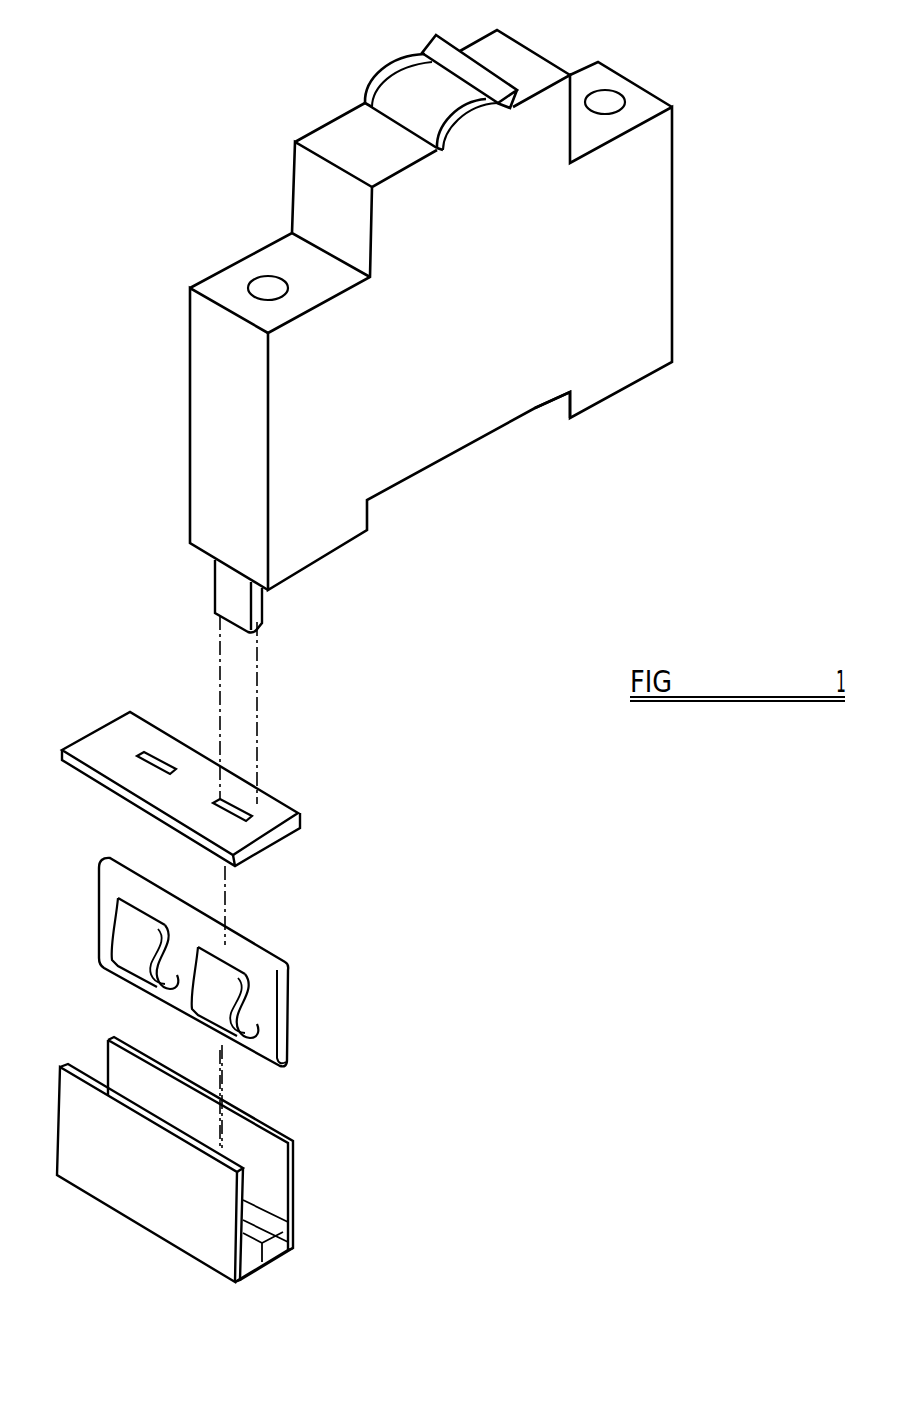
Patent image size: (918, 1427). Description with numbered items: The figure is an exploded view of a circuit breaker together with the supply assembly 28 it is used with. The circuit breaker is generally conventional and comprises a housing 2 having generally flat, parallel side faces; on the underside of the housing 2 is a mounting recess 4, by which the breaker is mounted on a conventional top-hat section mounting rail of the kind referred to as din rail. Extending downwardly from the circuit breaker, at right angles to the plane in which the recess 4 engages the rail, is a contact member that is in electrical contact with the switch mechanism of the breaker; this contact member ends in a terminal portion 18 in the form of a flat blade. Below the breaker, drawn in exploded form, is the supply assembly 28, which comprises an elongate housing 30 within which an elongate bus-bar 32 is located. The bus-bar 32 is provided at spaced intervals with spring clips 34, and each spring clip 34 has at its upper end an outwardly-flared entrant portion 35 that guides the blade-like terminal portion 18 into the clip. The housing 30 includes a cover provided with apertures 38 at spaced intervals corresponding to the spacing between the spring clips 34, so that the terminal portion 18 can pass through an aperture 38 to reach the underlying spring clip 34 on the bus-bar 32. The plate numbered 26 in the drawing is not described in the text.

The housing 2 is at (638, 268).
The mounting recess 4 is at (532, 405).
The terminal portion 18 is at (263, 610).
The cover plate 26 is at (293, 808).
The supply assembly 28 is at (406, 1242).
The elongate housing 30 is at (295, 1187).
The bus-bar 32 is at (283, 1040).
The spring clip 34 is at (128, 965).
The outwardly-flared entrant portion 35 is at (250, 960).
The aperture 38 is at (158, 760).